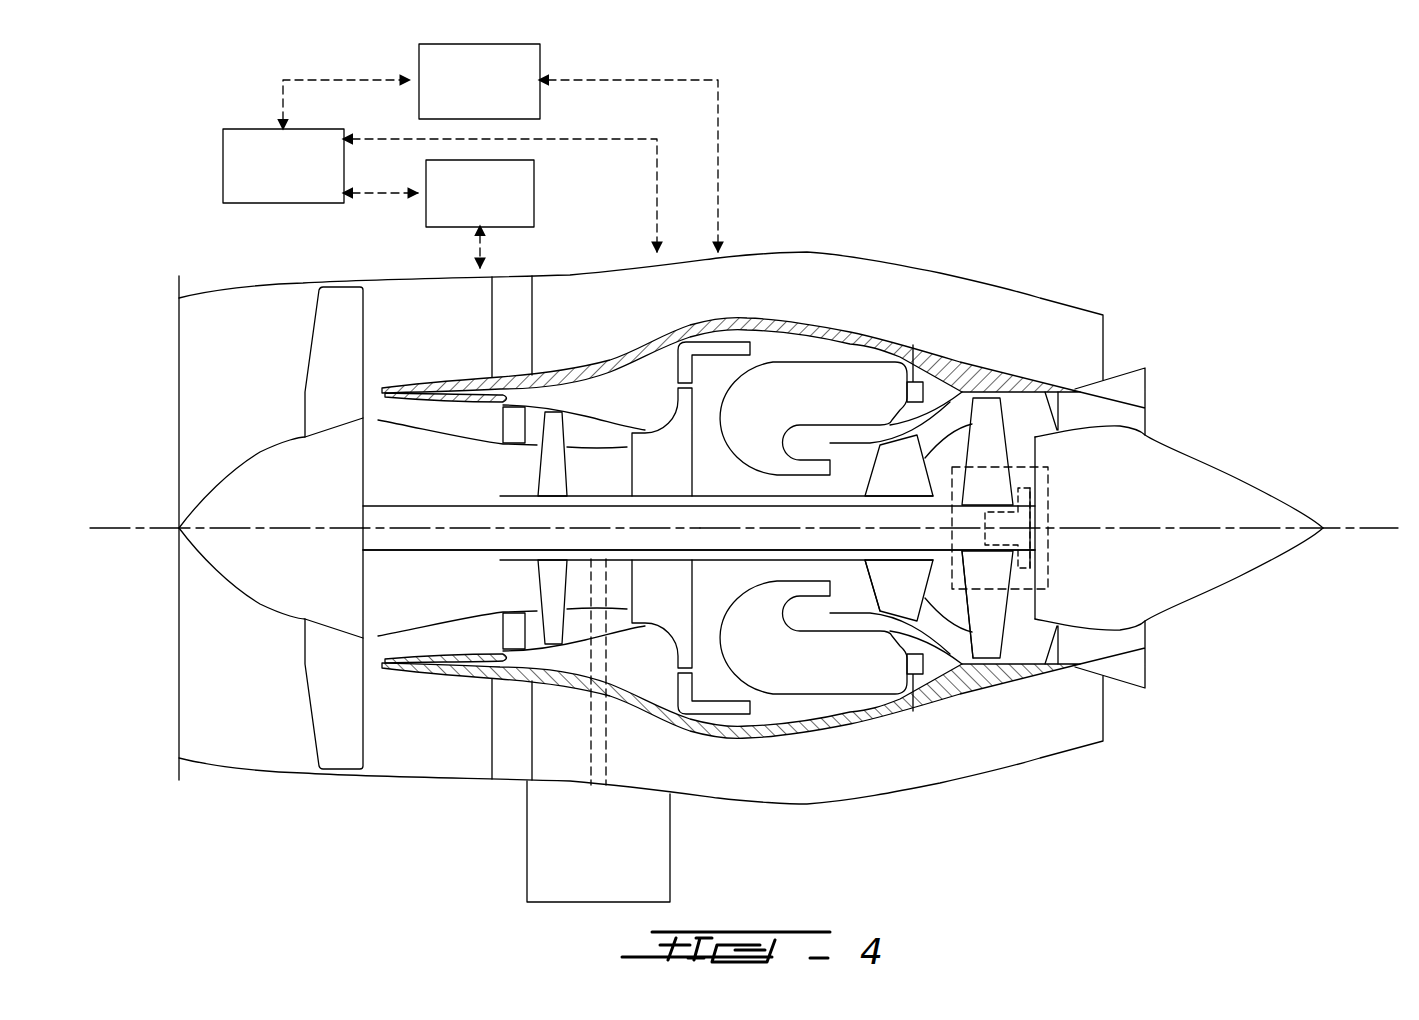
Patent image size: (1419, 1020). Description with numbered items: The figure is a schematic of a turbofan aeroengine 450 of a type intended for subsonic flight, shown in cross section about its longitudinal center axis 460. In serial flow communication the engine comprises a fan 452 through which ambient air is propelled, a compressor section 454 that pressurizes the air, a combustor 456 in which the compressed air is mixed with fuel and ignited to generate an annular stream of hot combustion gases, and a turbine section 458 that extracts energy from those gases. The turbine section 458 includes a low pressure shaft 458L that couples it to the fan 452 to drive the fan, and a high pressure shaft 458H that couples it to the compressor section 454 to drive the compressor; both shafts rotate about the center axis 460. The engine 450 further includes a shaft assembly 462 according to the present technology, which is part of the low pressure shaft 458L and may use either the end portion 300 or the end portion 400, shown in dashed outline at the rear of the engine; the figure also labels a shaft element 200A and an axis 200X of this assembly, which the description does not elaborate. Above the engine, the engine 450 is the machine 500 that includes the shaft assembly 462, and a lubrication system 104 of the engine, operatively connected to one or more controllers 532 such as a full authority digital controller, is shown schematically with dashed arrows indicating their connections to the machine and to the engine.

The turbofan aeroengine 450 is at (1025, 203).
The fan 452 is at (331, 685).
The compressor section 454 is at (588, 427).
The combustor 456 is at (812, 383).
The turbine section 458 is at (945, 595).
The high pressure shaft 458H is at (843, 496).
The low pressure shaft 458L is at (943, 506).
The longitudinal center axis 460 is at (115, 525).
The shaft assembly 462 is at (1020, 467).
The end portion 300 is at (1147, 494).
The end portion 400 is at (1050, 498).
The low pressure shaft 200A is at (922, 540).
The shaft axis 200X is at (1372, 527).
The machine 500 is at (263, 182).
The controller 532 is at (460, 97).
The lubrication system 104 is at (460, 210).